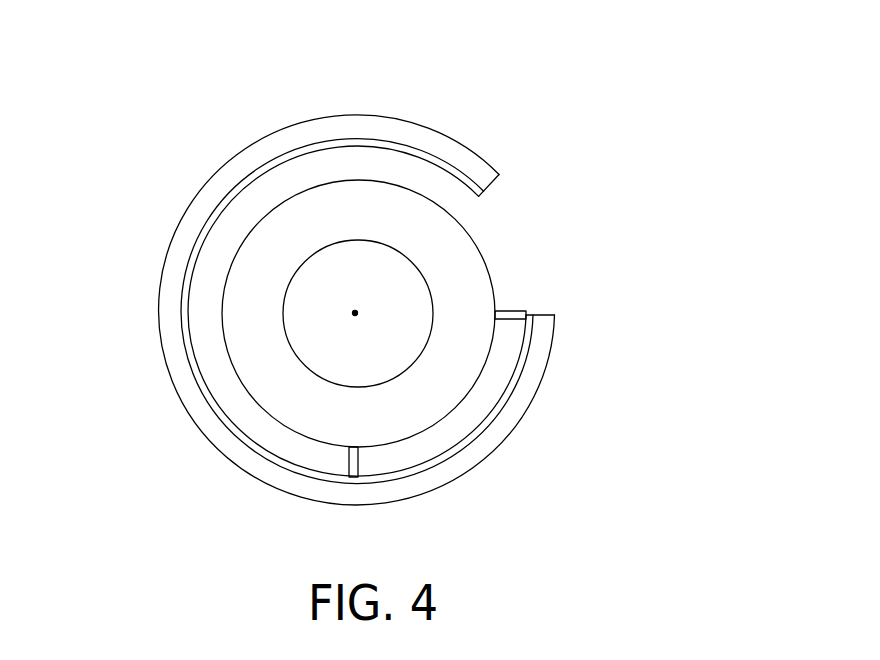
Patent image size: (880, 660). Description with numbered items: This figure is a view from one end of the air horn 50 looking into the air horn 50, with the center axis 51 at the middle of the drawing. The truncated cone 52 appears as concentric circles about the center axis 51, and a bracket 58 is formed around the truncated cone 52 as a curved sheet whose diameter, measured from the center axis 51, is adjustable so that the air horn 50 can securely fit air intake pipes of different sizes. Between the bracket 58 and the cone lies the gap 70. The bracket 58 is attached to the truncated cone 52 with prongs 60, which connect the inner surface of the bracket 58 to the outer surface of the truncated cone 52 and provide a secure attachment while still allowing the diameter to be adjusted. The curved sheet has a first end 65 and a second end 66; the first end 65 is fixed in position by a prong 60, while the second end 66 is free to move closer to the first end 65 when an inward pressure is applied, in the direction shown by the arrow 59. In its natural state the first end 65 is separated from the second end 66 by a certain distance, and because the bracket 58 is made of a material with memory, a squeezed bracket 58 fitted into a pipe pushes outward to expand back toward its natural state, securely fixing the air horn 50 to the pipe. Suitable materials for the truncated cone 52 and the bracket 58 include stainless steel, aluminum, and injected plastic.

The air horn 50 is at (642, 85).
The center axis 51 is at (354, 314).
The truncated cone 52 is at (253, 312).
The bracket 58 is at (217, 178).
The arrow 59 is at (500, 197).
The prong 60 is at (523, 313).
The first end 65 is at (555, 315).
The second end 66 is at (507, 185).
The gap 70 is at (318, 172).